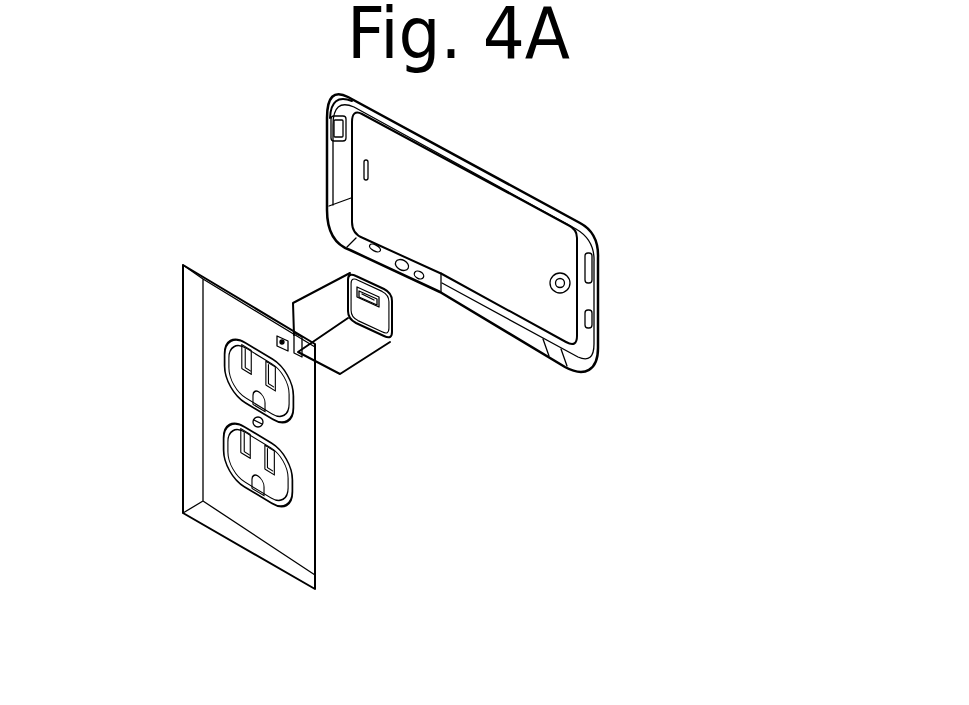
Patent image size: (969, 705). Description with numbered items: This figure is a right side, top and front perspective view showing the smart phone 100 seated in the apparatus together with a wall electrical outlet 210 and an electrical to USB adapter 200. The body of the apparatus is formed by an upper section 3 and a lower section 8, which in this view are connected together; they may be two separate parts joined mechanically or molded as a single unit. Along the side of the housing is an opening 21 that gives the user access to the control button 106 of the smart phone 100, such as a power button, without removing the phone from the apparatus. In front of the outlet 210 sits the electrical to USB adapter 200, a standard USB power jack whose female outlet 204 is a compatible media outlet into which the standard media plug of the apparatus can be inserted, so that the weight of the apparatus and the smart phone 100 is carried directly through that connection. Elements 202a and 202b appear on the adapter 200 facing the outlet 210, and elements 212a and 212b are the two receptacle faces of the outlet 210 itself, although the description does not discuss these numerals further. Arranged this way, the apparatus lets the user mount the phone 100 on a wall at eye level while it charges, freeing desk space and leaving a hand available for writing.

The upper section 3 is at (333, 187).
The lower section 8 is at (595, 292).
The opening 21 is at (333, 113).
The smart phone 100 is at (472, 202).
The control button 106 is at (337, 130).
The electrical to USB adapter 200 is at (345, 345).
The first prong 202a is at (280, 338).
The second prong 202b is at (298, 362).
The outlet 204 is at (380, 304).
The outlet 210 is at (195, 427).
The upper receptacle 212a is at (240, 360).
The lower receptacle 212b is at (285, 460).